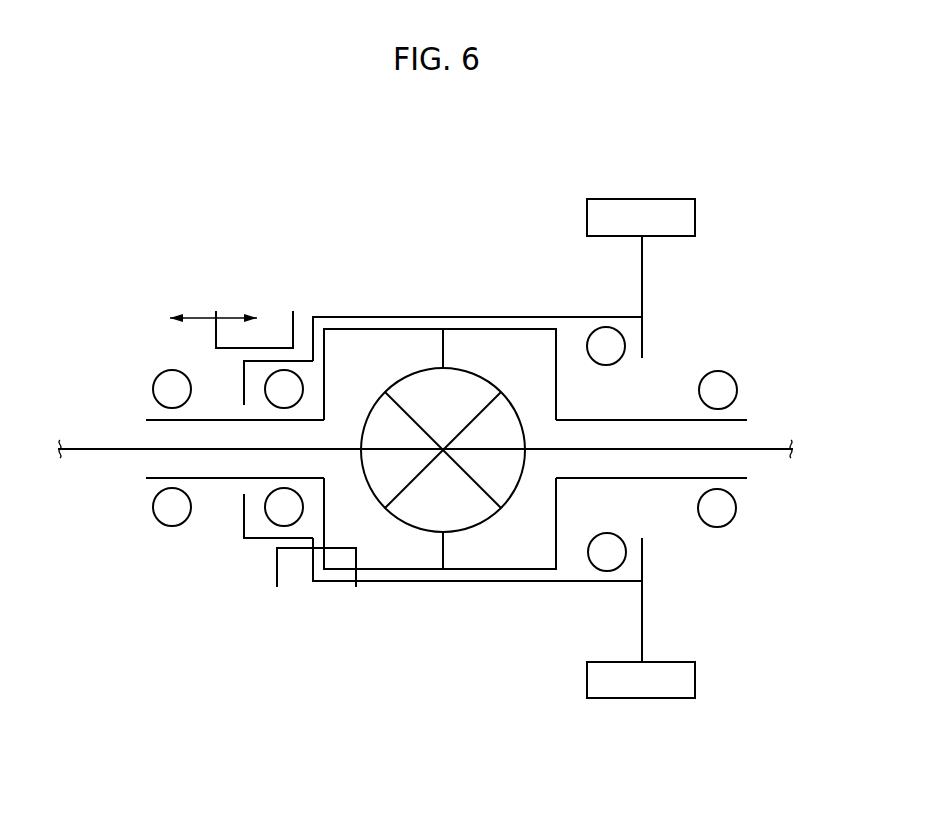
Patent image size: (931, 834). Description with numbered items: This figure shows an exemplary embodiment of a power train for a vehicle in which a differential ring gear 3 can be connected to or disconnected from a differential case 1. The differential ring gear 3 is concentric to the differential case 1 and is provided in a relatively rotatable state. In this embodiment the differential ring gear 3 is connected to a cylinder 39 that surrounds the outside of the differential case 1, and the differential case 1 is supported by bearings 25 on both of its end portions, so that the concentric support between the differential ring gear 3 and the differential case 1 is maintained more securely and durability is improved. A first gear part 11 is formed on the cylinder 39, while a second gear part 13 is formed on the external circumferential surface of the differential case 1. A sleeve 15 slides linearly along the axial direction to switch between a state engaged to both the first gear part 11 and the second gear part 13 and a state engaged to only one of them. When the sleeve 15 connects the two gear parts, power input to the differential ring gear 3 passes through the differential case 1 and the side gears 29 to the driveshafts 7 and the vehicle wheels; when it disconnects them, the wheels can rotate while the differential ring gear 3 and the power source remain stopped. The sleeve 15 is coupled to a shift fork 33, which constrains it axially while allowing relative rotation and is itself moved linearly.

The differential case 1 is at (365, 329).
The differential ring gear 3 is at (646, 208).
The driveshaft 7 is at (100, 449).
The first gear part 11 is at (437, 317).
The second gear part 13 is at (213, 420).
The sleeve 15 is at (292, 327).
The bearing 25 is at (607, 342).
The side gear 29 is at (495, 458).
The shift fork 33 is at (277, 567).
The cylinder 39 is at (462, 317).